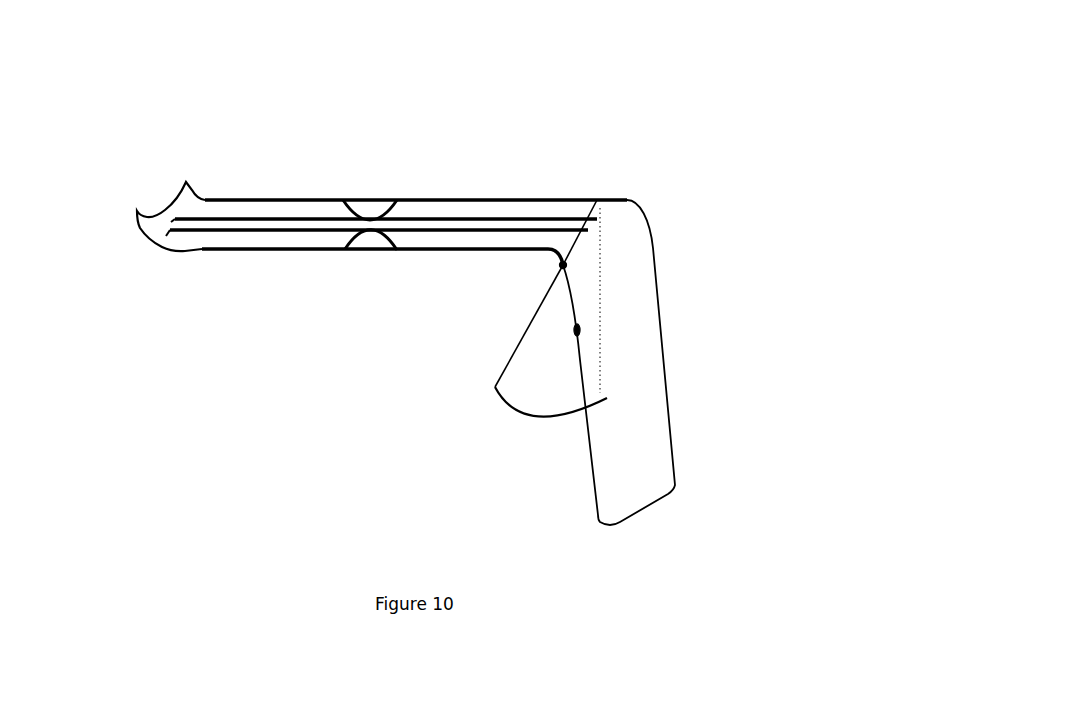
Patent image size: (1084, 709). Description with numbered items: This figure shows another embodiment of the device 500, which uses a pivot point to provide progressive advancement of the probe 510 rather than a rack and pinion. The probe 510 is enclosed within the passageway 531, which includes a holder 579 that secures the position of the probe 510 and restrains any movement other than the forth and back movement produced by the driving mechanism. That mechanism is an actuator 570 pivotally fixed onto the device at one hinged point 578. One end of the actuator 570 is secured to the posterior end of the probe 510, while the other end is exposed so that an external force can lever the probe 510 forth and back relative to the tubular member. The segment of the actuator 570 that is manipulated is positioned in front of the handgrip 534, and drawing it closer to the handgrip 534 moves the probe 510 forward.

The retractor assembly 500 is at (667, 147).
The probe 510 is at (423, 218).
The passageway 531 is at (205, 250).
The holder 579 is at (347, 250).
The hinged point 578 is at (560, 264).
The actuator 570 is at (507, 388).
The handgrip 534 is at (650, 463).